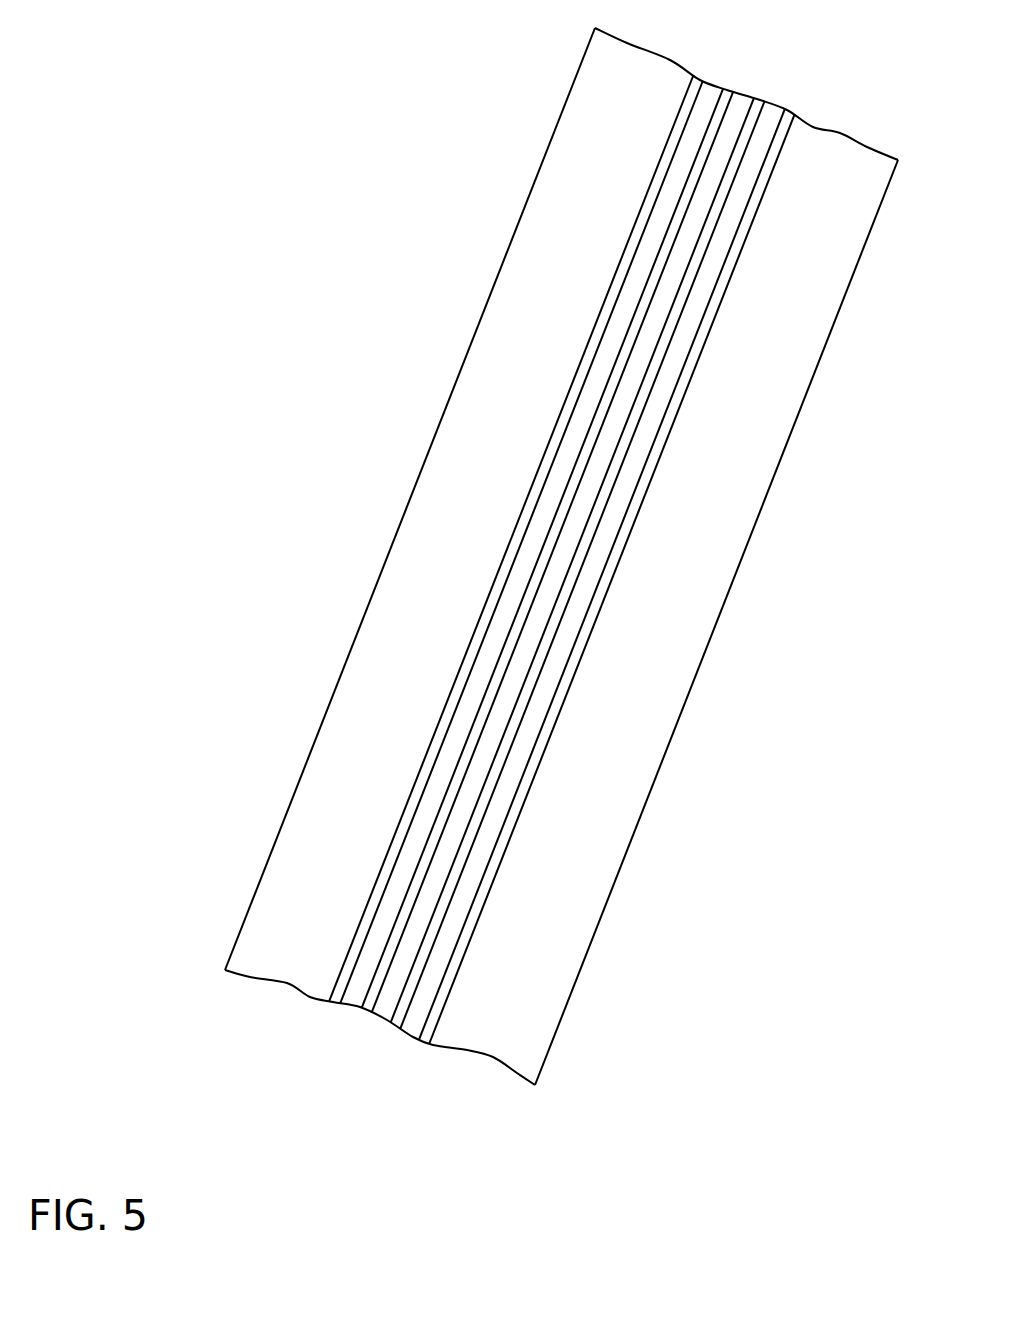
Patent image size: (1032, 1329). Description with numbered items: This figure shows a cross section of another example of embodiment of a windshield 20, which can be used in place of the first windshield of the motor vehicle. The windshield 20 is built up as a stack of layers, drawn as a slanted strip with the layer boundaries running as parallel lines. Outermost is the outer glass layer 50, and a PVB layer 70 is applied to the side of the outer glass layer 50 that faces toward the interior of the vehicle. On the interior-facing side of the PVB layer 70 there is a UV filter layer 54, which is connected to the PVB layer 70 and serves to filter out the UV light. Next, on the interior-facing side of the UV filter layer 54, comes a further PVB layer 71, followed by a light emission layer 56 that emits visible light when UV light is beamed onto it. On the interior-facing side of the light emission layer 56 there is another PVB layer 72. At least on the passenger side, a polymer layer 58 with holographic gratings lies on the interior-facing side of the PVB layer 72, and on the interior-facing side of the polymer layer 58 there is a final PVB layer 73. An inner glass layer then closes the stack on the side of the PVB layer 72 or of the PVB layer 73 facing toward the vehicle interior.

The windshield 20 is at (768, 74).
The outer glass layer 50 is at (590, 107).
The UV filter layer 54 is at (605, 363).
The light emission layer 56 is at (384, 1009).
The polymer layer with holographic gratings 58 is at (457, 913).
The PVB layer 70 is at (630, 249).
The PVB layer 71 is at (368, 1002).
The PVB layer 72 is at (487, 790).
The PVB layer 73 is at (438, 1002).